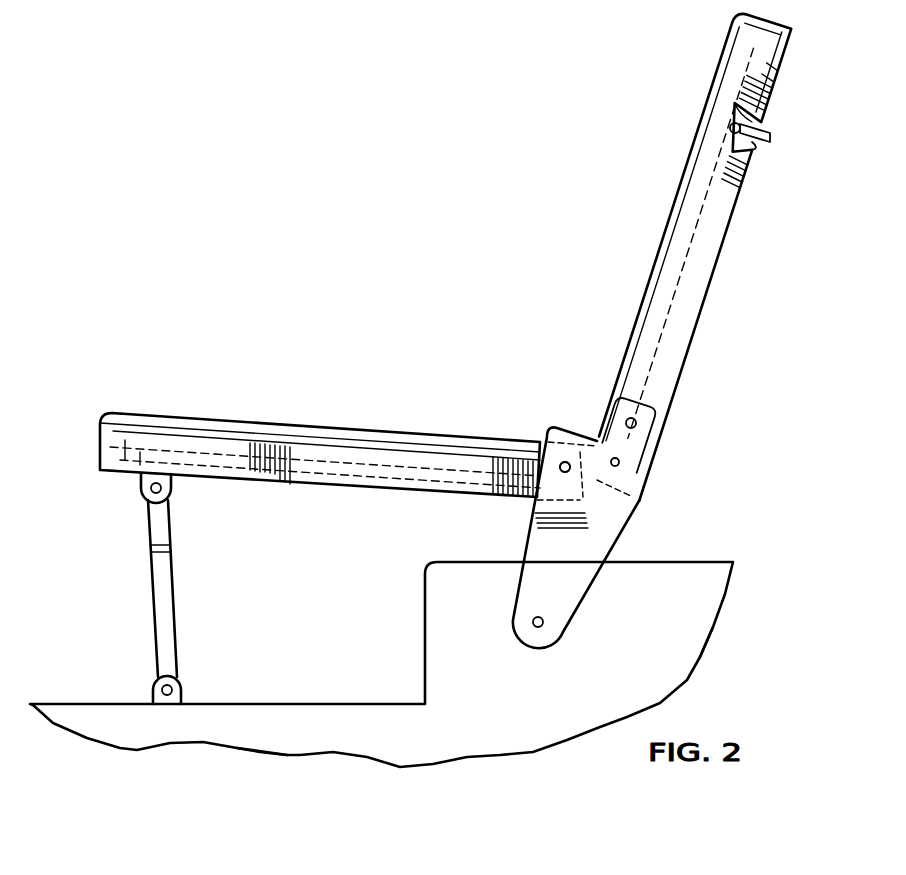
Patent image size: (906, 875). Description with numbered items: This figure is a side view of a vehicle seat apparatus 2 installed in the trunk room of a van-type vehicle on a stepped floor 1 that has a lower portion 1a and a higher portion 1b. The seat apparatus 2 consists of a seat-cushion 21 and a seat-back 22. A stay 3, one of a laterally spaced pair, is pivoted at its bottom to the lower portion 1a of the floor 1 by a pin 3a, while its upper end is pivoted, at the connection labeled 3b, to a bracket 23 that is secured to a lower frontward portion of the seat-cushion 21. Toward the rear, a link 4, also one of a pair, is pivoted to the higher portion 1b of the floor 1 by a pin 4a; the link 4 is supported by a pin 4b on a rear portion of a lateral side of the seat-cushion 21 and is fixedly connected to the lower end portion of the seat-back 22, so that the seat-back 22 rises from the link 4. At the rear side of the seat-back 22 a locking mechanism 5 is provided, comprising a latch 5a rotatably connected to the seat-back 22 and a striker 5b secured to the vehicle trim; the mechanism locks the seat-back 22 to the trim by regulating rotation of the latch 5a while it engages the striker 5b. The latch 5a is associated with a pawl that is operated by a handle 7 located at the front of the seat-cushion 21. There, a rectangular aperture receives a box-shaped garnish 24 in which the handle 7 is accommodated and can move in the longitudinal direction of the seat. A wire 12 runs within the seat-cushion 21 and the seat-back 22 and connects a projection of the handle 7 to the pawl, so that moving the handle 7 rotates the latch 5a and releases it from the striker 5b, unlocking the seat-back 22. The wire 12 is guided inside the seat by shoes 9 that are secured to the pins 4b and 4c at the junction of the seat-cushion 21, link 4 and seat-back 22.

The floor 1 is at (716, 565).
The lower portion 1a is at (268, 704).
The higher portion 1b is at (678, 618).
The seat apparatus 2 is at (544, 321).
The stay 3 is at (160, 610).
The pin 3a is at (178, 682).
The upper pivot of link 3b is at (148, 500).
The link 4 is at (596, 522).
The pin 4a is at (545, 624).
The pin 4b is at (568, 462).
The pin 4c is at (620, 462).
The locking mechanism 5 is at (728, 150).
The latch 5a is at (755, 150).
The striker 5b is at (772, 135).
The handle 7 is at (157, 435).
The shoe 9 is at (621, 466).
The wire 12 is at (366, 460).
The seat-cushion 21 is at (240, 430).
The seat-back 22 is at (757, 57).
The bracket 23 is at (170, 485).
The garnish 24 is at (122, 415).